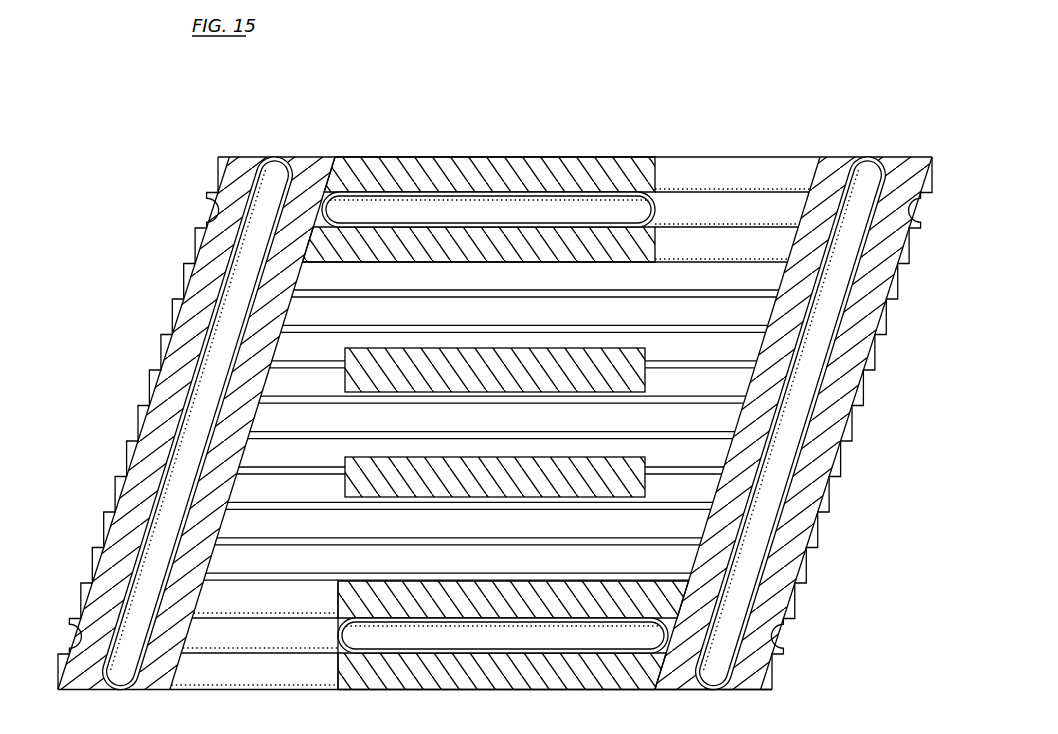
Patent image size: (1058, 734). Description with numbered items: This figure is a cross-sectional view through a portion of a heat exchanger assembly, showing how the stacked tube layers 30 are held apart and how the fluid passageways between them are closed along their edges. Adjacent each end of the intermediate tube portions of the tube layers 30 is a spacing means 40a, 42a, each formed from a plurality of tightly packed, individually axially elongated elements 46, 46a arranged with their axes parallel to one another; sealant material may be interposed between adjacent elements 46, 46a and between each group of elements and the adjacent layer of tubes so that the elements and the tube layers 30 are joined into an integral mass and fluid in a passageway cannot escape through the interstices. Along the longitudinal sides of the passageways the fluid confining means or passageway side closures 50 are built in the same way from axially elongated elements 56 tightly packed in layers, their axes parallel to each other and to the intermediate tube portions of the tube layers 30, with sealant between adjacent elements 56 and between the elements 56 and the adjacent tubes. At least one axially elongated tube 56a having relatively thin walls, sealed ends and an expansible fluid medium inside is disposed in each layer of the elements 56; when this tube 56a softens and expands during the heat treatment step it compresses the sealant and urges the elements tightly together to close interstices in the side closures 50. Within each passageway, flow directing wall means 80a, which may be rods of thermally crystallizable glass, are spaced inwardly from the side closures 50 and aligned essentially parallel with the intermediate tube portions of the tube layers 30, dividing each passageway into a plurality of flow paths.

The tube layer 30 is at (678, 306).
The spacing means 40a is at (247, 150).
The spacing means 42a is at (908, 148).
The axially elongated element 46 is at (735, 690).
The axially elongated element 46a is at (866, 168).
The passageway side closure 50 is at (426, 680).
The axially elongated element 56 is at (338, 636).
The axially elongated tube 56a is at (366, 642).
The flow directing wall means 80a is at (526, 457).